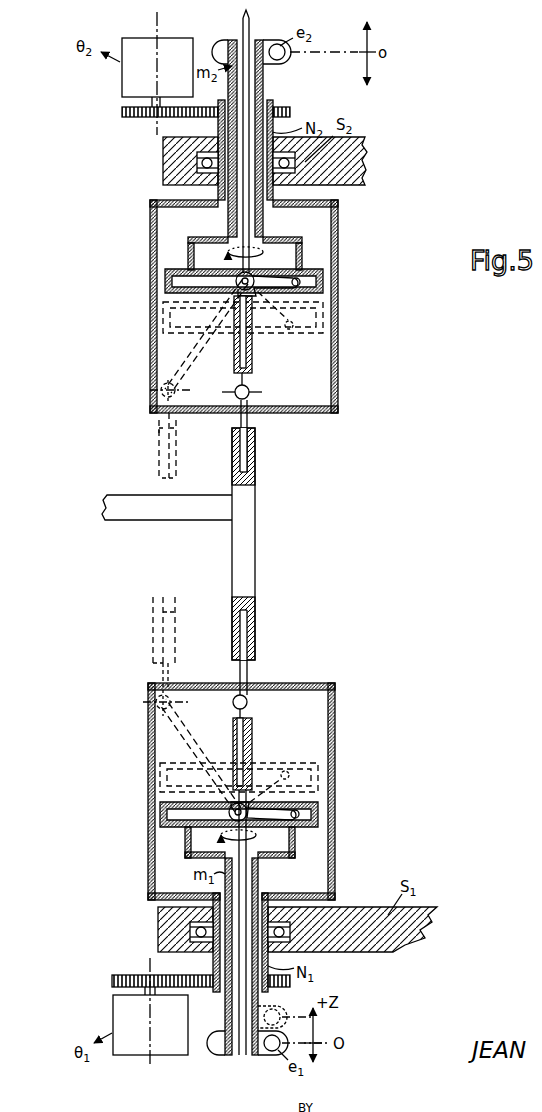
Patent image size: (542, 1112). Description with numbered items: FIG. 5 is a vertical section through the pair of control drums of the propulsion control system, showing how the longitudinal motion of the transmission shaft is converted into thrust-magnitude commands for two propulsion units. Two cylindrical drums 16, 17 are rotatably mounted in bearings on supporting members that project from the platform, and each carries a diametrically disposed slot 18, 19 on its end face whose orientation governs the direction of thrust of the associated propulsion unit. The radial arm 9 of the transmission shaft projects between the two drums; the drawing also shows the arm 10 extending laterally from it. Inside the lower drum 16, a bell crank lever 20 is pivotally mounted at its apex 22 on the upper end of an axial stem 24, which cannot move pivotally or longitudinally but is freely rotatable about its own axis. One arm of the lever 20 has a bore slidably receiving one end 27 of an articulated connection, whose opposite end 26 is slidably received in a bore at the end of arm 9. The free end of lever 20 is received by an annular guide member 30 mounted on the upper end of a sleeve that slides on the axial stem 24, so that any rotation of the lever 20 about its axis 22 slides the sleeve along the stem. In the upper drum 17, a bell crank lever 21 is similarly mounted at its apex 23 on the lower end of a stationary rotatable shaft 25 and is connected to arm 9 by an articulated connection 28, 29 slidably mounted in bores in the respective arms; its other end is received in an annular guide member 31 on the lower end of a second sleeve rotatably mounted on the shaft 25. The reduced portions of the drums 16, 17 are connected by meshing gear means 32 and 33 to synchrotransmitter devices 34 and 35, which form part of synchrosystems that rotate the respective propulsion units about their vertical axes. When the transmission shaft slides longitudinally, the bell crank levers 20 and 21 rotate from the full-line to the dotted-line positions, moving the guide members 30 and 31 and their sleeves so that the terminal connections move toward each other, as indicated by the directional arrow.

The radial arm 9 is at (255, 572).
The lateral arm 10 is at (255, 494).
The drum 16 is at (148, 813).
The drum 17 is at (150, 314).
The slot 18 is at (298, 683).
The slot 19 is at (300, 414).
The bell crank lever 20 is at (252, 732).
The bell crank lever 21 is at (253, 358).
The apex 22 is at (248, 828).
The apex 23 is at (254, 275).
The axial stem 24 is at (247, 1012).
The shaft 25 is at (250, 98).
The end of articulated connection 26 is at (249, 676).
The end of articulated connection 27 is at (250, 706).
The articulated connection 28 is at (249, 430).
The articulated connection 29 is at (250, 388).
The annular guide member 30 is at (320, 802).
The annular guide member 31 is at (320, 282).
The meshing gear means 32 is at (203, 974).
The meshing gear means 33 is at (215, 118).
The synchrotransmitter device 34 is at (130, 1006).
The synchrotransmitter device 35 is at (135, 83).